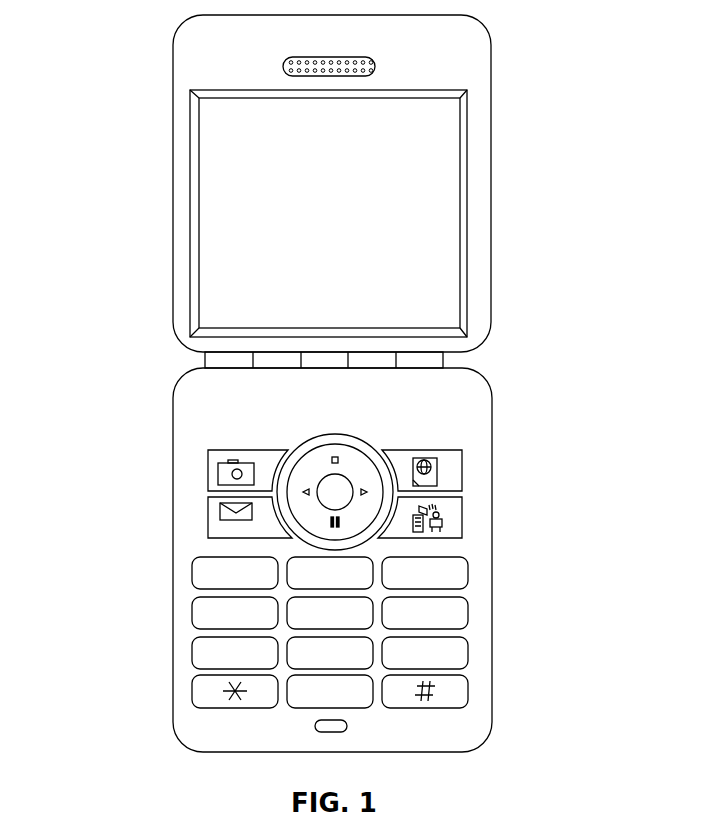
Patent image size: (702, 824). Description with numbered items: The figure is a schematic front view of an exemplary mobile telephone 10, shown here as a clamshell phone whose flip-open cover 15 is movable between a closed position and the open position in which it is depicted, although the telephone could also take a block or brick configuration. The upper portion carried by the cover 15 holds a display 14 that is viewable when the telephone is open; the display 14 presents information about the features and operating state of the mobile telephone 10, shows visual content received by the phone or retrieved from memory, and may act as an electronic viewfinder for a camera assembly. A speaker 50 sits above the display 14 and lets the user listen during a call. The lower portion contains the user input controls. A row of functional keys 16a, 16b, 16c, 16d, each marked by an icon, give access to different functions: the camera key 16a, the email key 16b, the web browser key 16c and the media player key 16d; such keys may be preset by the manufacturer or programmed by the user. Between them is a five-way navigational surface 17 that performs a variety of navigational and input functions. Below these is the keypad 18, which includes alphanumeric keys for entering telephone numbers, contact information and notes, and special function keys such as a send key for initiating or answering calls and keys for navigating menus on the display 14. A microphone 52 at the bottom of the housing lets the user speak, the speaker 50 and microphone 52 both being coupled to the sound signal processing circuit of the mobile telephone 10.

The mobile telephone 10 is at (331, 404).
The display 14 is at (212, 201).
The flip-open cover 15 is at (121, 86).
The functional key for camera 16a is at (215, 471).
The functional key for email function 16b is at (215, 517).
The functional key for web browser 16c is at (448, 467).
The functional key for media player 16d is at (452, 508).
The five-way navigational surface 17 is at (328, 488).
The keypad 18 is at (253, 724).
The speaker 50 is at (376, 66).
The microphone 52 is at (333, 738).